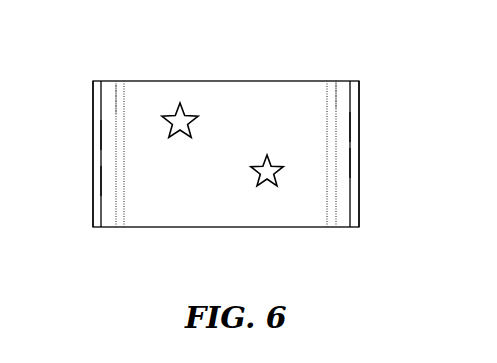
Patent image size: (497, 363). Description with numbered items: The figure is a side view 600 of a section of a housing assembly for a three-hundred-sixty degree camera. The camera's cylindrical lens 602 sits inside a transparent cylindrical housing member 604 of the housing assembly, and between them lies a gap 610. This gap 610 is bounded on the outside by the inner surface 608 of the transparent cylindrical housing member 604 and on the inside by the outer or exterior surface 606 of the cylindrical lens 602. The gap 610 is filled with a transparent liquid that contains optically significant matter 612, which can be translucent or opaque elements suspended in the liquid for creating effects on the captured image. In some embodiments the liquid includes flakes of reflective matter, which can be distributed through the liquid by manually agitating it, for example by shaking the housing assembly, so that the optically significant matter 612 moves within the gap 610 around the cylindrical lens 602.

The side view 600 is at (233, 46).
The cylindrical lens 602 is at (120, 81).
The transparent cylindrical housing member 604 is at (97, 81).
The exterior surface 606 is at (116, 100).
The inner surface 608 is at (100, 134).
The gap 610 is at (107, 181).
The optically significant matter 612 is at (190, 118).